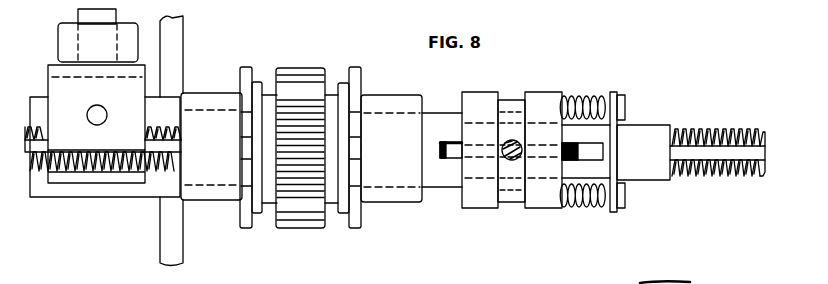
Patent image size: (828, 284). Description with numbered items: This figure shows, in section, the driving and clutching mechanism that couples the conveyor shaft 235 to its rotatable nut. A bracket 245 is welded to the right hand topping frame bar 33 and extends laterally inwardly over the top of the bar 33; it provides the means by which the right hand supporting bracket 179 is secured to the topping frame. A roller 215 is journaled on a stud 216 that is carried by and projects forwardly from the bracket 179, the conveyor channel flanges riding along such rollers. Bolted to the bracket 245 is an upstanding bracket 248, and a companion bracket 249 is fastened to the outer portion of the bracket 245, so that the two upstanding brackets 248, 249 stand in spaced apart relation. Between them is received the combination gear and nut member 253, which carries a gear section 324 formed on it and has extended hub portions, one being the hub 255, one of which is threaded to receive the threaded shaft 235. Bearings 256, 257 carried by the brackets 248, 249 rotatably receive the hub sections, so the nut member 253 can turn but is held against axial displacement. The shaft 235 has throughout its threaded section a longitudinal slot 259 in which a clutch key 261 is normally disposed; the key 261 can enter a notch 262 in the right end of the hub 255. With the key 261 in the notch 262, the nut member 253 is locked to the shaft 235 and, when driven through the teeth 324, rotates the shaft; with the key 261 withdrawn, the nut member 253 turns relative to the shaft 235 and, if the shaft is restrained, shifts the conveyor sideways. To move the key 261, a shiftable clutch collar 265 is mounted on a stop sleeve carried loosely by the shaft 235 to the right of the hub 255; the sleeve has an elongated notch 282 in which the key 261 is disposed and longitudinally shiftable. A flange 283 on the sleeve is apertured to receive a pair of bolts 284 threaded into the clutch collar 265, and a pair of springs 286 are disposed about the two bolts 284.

The topping frame bar 33 is at (178, 55).
The supporting bracket 179 is at (63, 80).
The roller 215 is at (130, 33).
The stud 216 is at (88, 14).
The threaded shaft 235 is at (692, 122).
The bracket 245 is at (42, 190).
The upstanding bracket 248 is at (254, 69).
The companion bracket 249 is at (372, 79).
The combination gear and nut member 253 is at (309, 71).
The hub portion 255 is at (441, 178).
The bearing 256 is at (216, 194).
The bearing 257 is at (390, 195).
The longitudinal slot 259 is at (716, 156).
The clutch key 261 is at (565, 152).
The notch 262 is at (447, 142).
The shiftable clutch collar 265 is at (544, 217).
The elongated notch 282 is at (592, 150).
The flange 283 is at (613, 143).
The bolt 284 is at (618, 96).
The spring 286 is at (575, 95).
The gear section 324 is at (302, 220).